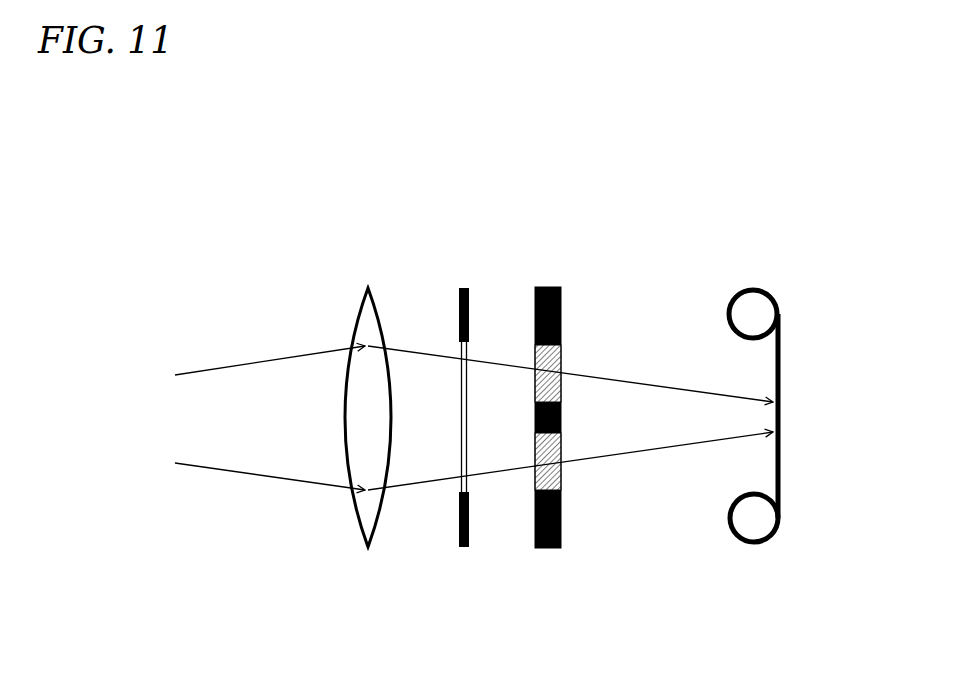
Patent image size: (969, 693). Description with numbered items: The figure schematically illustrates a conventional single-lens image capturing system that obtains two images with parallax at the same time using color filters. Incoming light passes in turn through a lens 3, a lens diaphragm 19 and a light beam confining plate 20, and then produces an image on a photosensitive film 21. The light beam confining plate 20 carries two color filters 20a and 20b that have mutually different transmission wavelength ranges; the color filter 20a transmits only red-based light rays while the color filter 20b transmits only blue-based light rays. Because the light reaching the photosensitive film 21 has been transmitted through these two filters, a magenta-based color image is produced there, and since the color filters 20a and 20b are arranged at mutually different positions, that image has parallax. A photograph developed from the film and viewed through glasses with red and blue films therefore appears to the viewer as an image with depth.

The lens 3 is at (366, 292).
The lens diaphragm 19 is at (463, 290).
The light beam confining plate 20 is at (558, 290).
The color filter 20a is at (548, 372).
The color filter 20b is at (558, 462).
The photosensitive film 21 is at (778, 357).